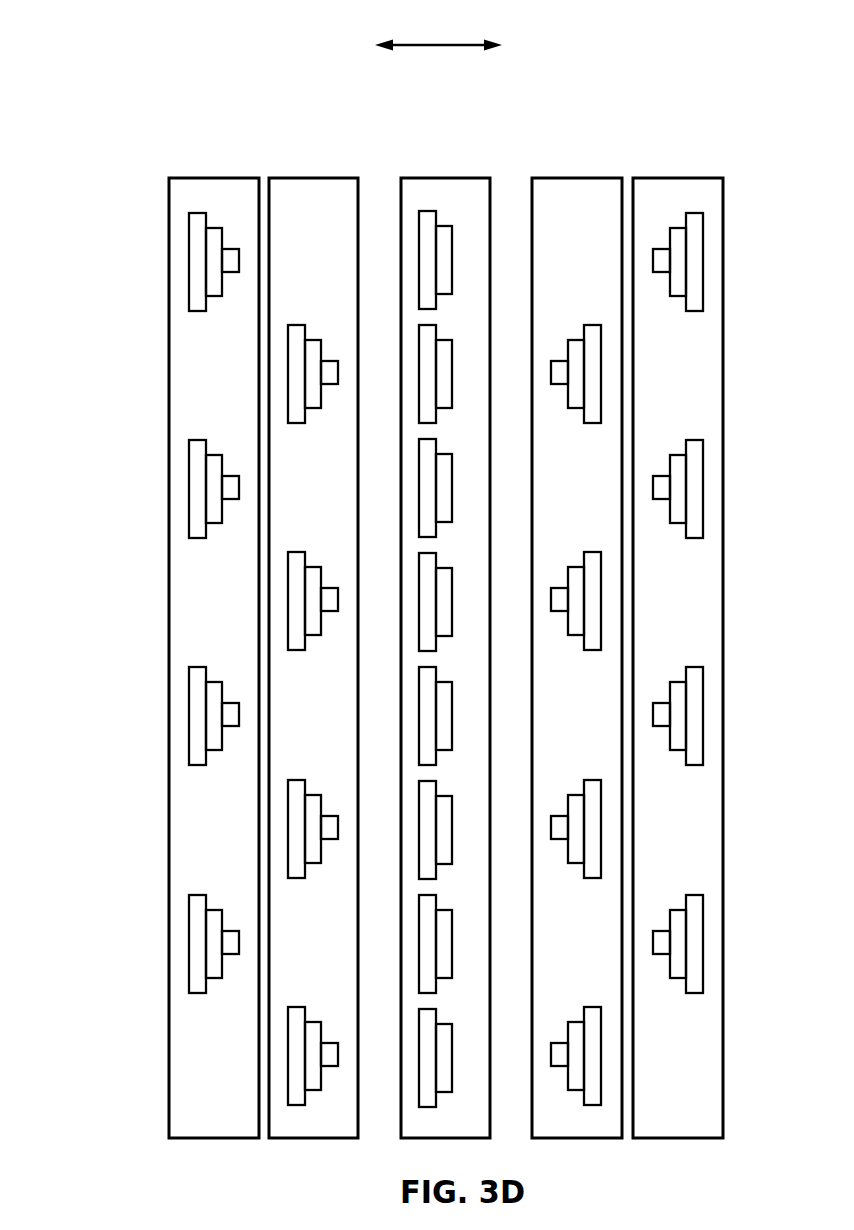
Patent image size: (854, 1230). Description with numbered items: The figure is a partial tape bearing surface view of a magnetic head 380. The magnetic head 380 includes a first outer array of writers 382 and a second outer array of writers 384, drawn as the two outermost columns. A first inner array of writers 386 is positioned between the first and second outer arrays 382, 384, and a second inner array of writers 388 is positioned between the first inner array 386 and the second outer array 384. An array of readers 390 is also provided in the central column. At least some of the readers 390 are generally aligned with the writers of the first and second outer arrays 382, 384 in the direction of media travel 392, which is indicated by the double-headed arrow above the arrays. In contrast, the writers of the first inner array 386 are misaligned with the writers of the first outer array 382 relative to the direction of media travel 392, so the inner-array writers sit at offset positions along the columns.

The magnetic head 380 is at (108, 130).
The first outer array of writers 382 is at (181, 150).
The second outer array of writers 384 is at (674, 152).
The first inner array of writers 386 is at (321, 150).
The second inner array of writers 388 is at (553, 152).
The array of readers 390 is at (441, 150).
The direction of media travel 392 is at (438, 32).